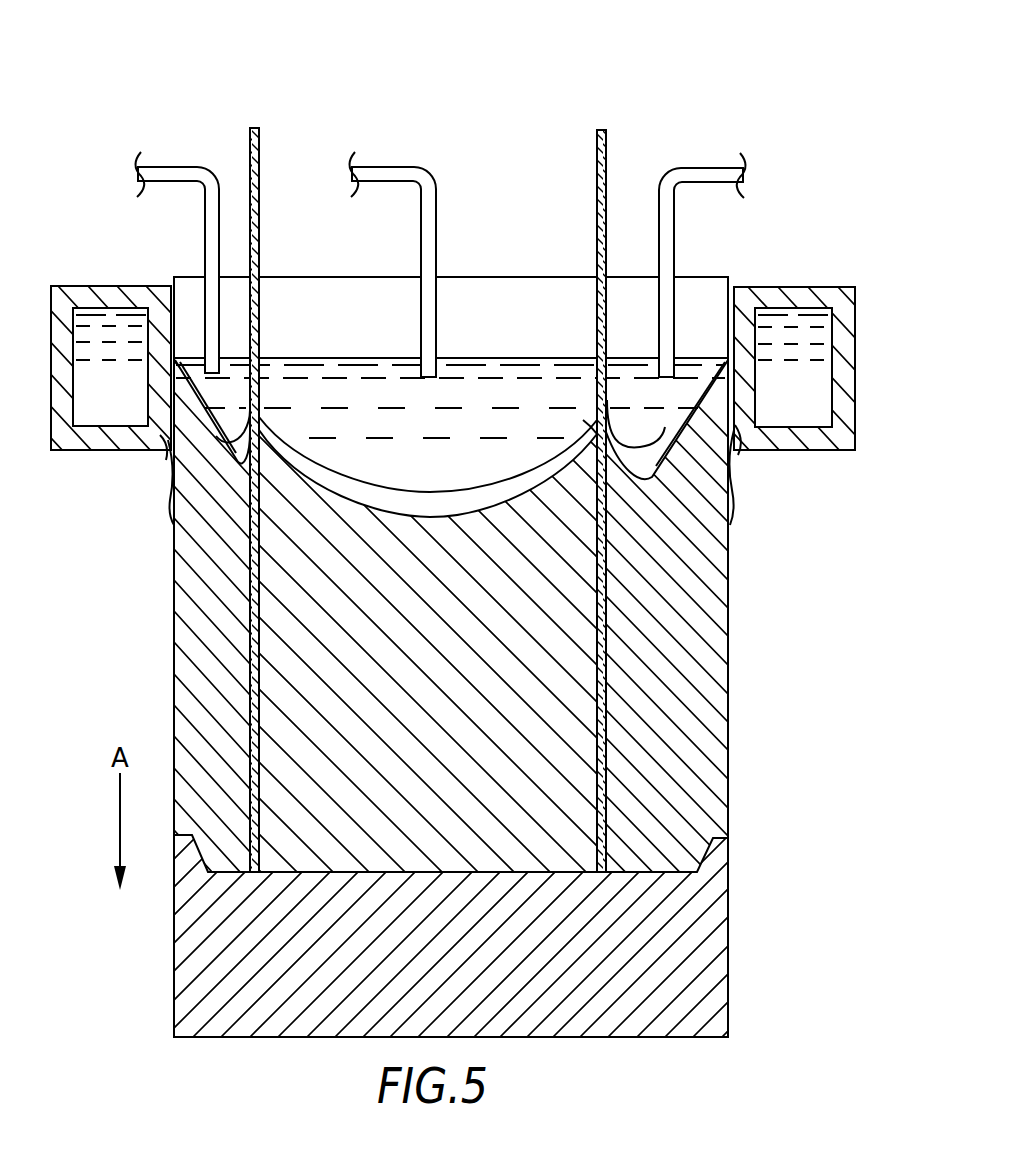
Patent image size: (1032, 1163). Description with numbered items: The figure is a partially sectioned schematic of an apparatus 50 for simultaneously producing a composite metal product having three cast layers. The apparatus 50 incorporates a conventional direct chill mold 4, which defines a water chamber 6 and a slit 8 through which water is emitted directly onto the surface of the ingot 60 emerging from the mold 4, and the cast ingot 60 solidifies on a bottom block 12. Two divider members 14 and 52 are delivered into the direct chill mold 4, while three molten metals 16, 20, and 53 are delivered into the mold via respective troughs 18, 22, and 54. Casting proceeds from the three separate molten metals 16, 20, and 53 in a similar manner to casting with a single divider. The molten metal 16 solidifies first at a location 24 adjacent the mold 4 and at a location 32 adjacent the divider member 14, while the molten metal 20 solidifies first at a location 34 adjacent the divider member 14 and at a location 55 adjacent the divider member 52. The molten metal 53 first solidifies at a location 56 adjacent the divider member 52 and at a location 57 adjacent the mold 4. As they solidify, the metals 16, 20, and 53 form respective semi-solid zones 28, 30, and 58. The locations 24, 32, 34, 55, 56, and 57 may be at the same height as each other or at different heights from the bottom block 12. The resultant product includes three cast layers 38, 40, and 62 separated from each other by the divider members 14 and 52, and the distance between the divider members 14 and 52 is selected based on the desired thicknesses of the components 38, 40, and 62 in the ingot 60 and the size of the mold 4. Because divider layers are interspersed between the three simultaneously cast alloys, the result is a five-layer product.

The direct chill mold 4 is at (855, 330).
The water chamber 6 is at (820, 403).
The slit 8 is at (732, 462).
The bottom block 12 is at (728, 930).
The divider member 14 is at (261, 137).
The molten metal 16 is at (197, 368).
The trough 18 is at (166, 166).
The molten metal 20 is at (303, 372).
The trough 22 is at (386, 167).
The location 24 is at (178, 406).
The semi-solid zone 28 is at (222, 437).
The semi-solid zone 30 is at (422, 456).
The location 32 is at (247, 458).
The location 34 is at (256, 420).
The cast layer 38 is at (196, 648).
The cast layer 40 is at (415, 702).
The apparatus 50 is at (661, 84).
The divider member 52 is at (597, 142).
The molten metal 53 is at (695, 368).
The trough 54 is at (701, 167).
The location 55 is at (590, 432).
The location 56 is at (668, 388).
The location 57 is at (722, 393).
The semi-solid zone 58 is at (670, 452).
The ingot 60 is at (765, 648).
The cast layer 62 is at (656, 638).